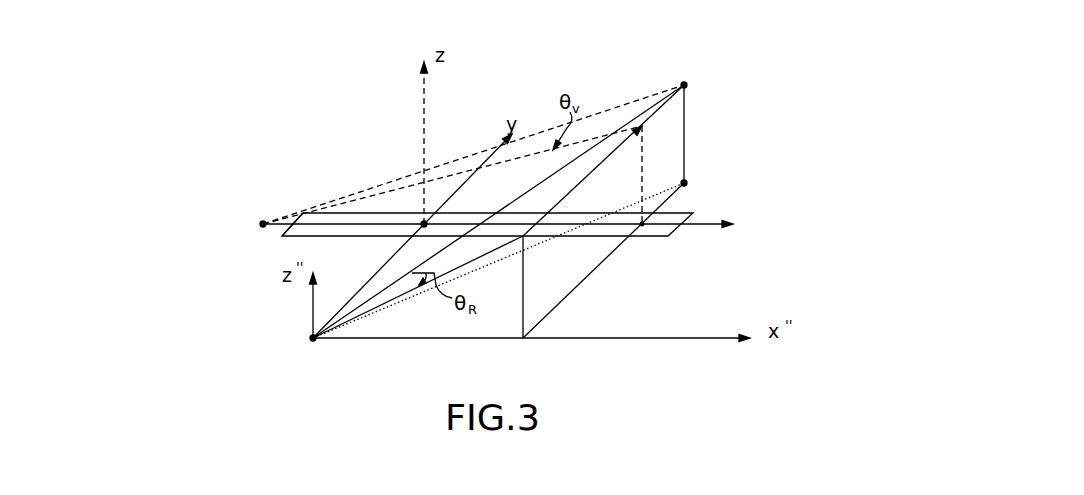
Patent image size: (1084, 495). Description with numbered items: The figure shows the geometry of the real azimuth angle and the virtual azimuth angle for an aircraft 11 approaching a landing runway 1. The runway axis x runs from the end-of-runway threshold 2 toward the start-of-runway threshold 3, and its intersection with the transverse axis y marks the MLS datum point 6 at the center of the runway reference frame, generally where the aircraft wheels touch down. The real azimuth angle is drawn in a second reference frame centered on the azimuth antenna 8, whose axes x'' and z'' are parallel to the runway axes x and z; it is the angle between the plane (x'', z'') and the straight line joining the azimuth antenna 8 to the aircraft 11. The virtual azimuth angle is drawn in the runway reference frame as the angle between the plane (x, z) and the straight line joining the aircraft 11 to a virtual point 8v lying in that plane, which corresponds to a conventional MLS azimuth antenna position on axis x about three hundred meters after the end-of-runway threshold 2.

The landing runway 1 is at (648, 237).
The end-of-runway threshold 2 is at (285, 231).
The start-of-runway threshold 3 is at (690, 216).
The MLS datum point 6 is at (427, 222).
The azimuth antenna 8 is at (311, 340).
The virtual point 8v is at (262, 225).
The aircraft 11 is at (686, 82).